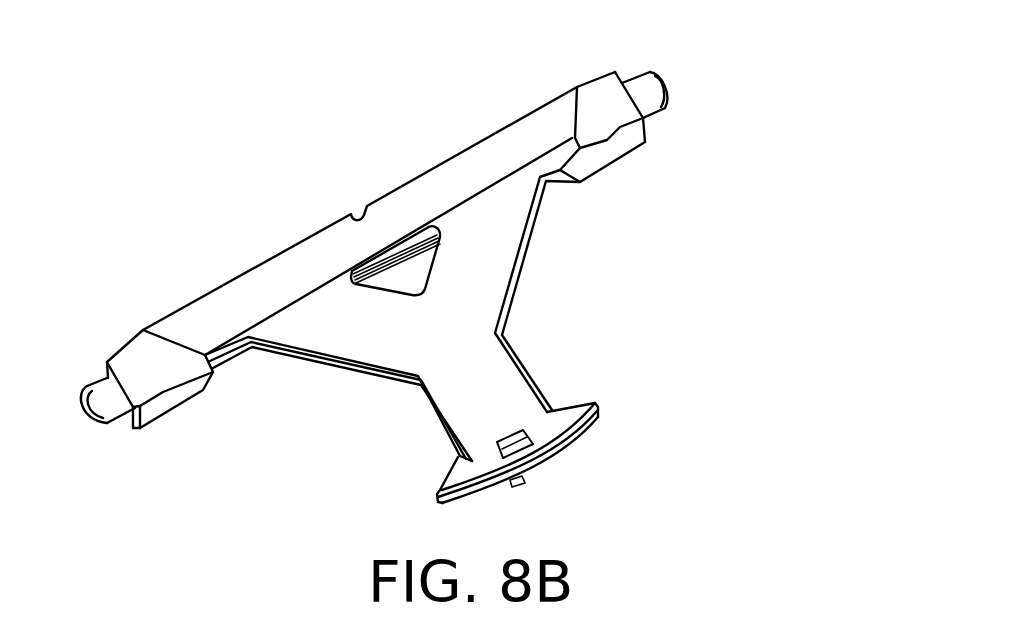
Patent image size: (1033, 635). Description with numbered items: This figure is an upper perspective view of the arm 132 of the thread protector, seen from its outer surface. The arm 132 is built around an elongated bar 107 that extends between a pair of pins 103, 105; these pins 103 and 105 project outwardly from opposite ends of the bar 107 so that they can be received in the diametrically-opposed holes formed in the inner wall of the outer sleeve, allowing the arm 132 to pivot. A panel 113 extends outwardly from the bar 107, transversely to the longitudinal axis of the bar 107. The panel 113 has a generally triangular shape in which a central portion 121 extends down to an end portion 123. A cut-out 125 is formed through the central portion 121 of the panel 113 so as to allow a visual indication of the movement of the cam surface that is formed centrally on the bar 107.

The pin 103 is at (90, 389).
The pin 105 is at (645, 73).
The bar 107 is at (315, 245).
The panel 113 is at (487, 283).
The central portion 121 is at (345, 342).
The end portion 123 is at (505, 375).
The cut-out 125 is at (425, 257).
The arm 132 is at (526, 79).